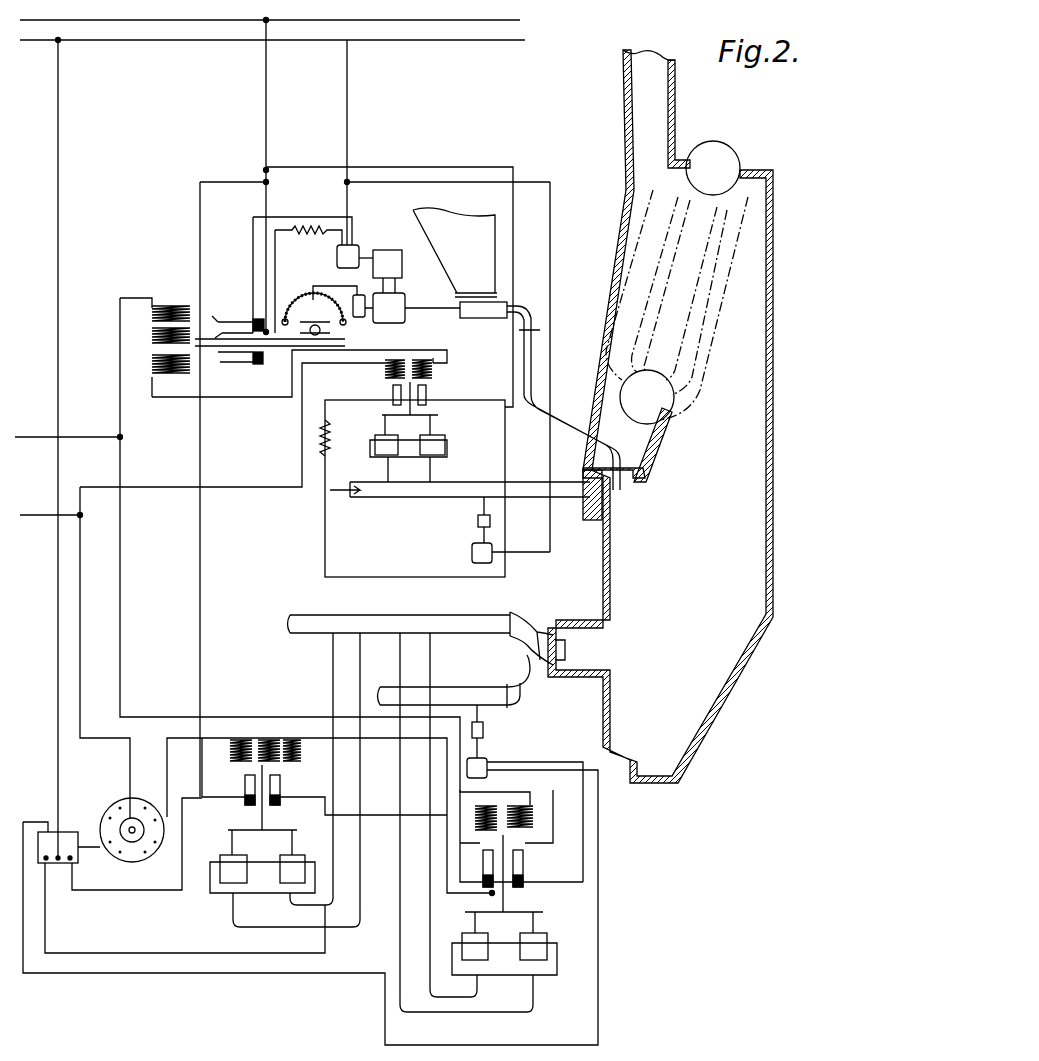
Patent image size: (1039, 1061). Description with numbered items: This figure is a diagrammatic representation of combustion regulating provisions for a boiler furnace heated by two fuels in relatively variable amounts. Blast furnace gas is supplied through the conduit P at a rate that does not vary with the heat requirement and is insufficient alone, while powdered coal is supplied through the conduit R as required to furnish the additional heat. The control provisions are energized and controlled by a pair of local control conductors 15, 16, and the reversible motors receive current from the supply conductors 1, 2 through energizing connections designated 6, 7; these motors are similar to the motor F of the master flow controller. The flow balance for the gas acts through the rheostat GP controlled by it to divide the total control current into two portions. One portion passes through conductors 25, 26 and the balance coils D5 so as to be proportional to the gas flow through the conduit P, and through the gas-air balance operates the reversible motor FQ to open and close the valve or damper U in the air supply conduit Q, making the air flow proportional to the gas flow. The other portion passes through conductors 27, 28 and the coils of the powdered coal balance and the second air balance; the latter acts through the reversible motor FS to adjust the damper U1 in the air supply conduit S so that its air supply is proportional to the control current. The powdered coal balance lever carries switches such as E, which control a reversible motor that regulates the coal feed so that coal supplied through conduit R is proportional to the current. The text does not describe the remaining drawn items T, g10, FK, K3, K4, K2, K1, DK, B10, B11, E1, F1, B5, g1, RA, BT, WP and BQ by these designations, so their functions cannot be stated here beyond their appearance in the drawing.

The supply conductor 1 is at (190, 41).
The supply conductor 2 is at (147, 23).
The energizing conductor connection 6 is at (350, 156).
The energizing conductor connection 7 is at (270, 146).
The local control conductor 15 is at (35, 445).
The local control conductor 16 is at (40, 498).
The conductor 25 is at (82, 670).
The conductor 26 is at (122, 685).
The conductor 27 is at (160, 492).
The conductor 28 is at (120, 348).
The flue T is at (650, 96).
The resistance g10 is at (300, 228).
The relay FK is at (336, 256).
The motor K3 is at (402, 264).
The valve controller K4 is at (380, 325).
The valve K2 is at (406, 318).
The feed valve K1 is at (490, 318).
The damper control DK is at (312, 292).
The switch B10 is at (220, 320).
The switch contact B11 is at (325, 340).
The contact E1 is at (236, 318).
The balance coil D5 is at (150, 300).
The coil F1 is at (385, 390).
The control box B5 is at (415, 479).
The resistance g1 is at (335, 440).
The air supply conduit S is at (385, 500).
The damper U1 is at (478, 512).
The reversible motor FS is at (470, 553).
The conduit R is at (585, 430).
The boiler RA is at (660, 462).
The conduit P is at (443, 645).
The air supply conduit Q is at (505, 710).
The valve or damper U is at (485, 728).
The reversible motor FQ is at (490, 760).
The motor F is at (283, 788).
The dashpot BT is at (212, 893).
The switch WP is at (45, 822).
The rheostat GP is at (108, 800).
The switch E is at (482, 870).
The dashpot BQ is at (545, 985).